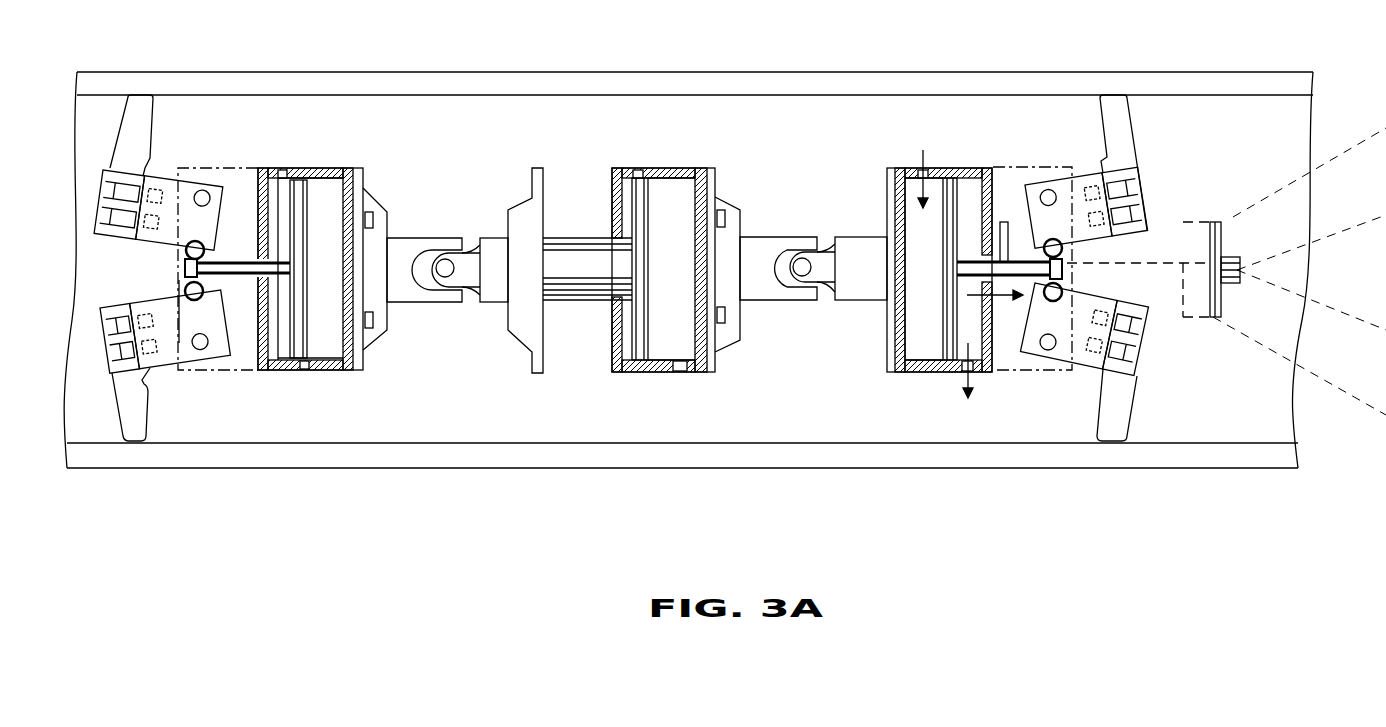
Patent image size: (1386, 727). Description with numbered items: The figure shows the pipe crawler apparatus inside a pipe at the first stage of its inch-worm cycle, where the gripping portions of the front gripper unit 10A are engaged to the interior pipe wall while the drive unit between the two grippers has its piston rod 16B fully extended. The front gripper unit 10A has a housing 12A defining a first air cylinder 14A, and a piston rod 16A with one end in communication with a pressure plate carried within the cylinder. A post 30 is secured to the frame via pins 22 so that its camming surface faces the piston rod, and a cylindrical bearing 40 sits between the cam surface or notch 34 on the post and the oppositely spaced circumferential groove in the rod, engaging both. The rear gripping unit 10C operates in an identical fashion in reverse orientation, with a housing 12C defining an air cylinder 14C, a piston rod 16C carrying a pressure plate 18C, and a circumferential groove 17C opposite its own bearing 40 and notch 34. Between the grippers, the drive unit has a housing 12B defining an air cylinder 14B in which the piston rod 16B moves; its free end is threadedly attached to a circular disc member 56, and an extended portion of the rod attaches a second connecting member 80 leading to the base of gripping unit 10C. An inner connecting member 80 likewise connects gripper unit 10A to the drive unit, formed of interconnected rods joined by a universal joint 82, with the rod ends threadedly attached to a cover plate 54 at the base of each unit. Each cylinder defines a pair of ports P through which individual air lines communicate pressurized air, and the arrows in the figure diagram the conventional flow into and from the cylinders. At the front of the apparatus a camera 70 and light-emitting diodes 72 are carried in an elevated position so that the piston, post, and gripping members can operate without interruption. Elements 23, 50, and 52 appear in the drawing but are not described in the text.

The gripper unit 10A is at (935, 170).
The gripping unit 10C is at (350, 170).
The housing 12A is at (900, 346).
The housing 12B is at (612, 362).
The housing 12C is at (312, 170).
The air cylinder 14A is at (980, 345).
The air cylinder 14B is at (668, 345).
The air cylinder 14C is at (355, 355).
The piston rod 16A is at (1008, 262).
The piston rod 16B is at (612, 168).
The piston rod 16C is at (232, 262).
The circumferential groove 17C is at (187, 268).
The pressure plate 18C is at (305, 355).
The pins 22 is at (1048, 350).
The clamp jaw 23 is at (200, 350).
The post 30 is at (1118, 370).
The cam surface 34 is at (214, 290).
The cylindrical bearing 40 is at (188, 293).
The clamp jaw 50 is at (1117, 125).
The jaw top 52 is at (1107, 96).
The cover plate 54 is at (720, 195).
The circular disc member 56 is at (520, 212).
The camera 70 is at (1245, 262).
The light-emitting diodes 72 is at (1222, 235).
The connecting member 80 is at (788, 240).
The universal joint 82 is at (445, 272).
The ports P is at (282, 170).